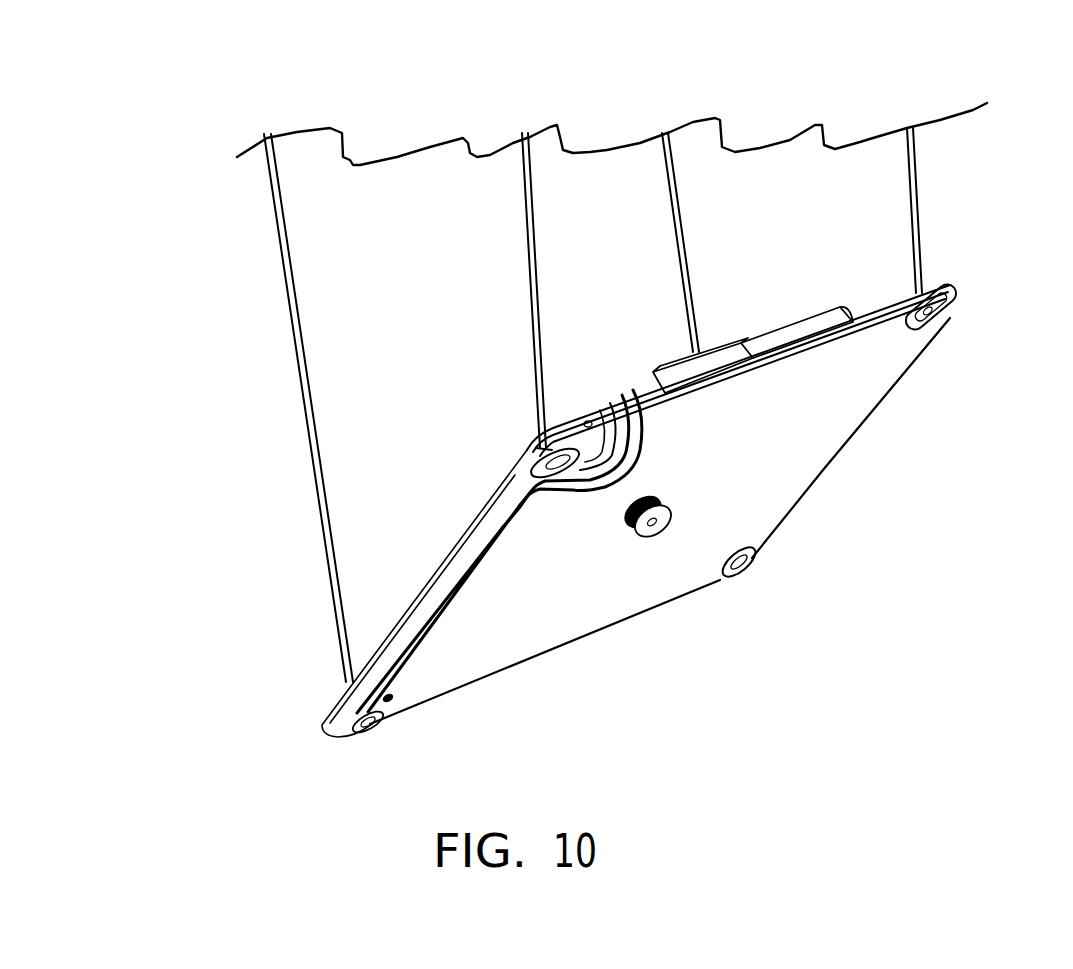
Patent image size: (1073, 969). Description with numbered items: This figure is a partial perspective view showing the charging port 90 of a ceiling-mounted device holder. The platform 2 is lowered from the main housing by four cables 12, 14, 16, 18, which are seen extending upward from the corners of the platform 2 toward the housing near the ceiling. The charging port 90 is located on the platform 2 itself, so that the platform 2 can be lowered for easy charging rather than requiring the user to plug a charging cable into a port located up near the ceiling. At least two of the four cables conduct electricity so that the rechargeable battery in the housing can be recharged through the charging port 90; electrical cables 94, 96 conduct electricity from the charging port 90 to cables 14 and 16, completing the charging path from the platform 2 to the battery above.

The platform 2 is at (797, 470).
The cable 12 is at (537, 330).
The cable 14 is at (303, 430).
The cable 16 is at (690, 273).
The cable 18 is at (917, 217).
The charging port 90 is at (604, 488).
The electrical cable 94 is at (402, 708).
The electrical cable 96 is at (588, 420).